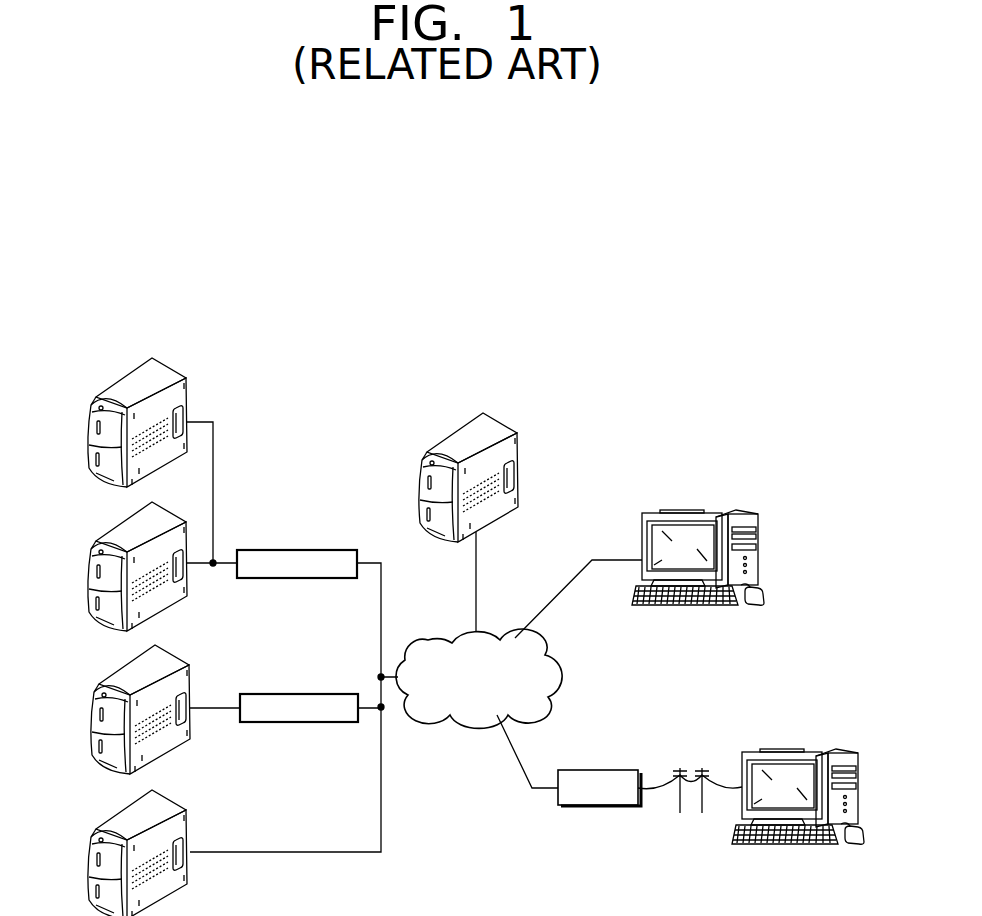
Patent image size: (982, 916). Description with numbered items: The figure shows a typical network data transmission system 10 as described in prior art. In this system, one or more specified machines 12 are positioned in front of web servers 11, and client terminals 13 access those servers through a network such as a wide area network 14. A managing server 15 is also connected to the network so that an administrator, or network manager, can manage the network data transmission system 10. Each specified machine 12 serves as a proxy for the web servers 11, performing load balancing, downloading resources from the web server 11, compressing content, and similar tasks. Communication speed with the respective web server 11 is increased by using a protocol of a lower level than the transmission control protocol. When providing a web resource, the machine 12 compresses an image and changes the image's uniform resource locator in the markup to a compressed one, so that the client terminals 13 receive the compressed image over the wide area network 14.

The network data transmission system 10 is at (642, 290).
The web server 11 is at (96, 392).
The specified machine 12 is at (297, 550).
The client terminal 13 is at (747, 505).
The wide area network 14 is at (490, 632).
The managing server 15 is at (498, 421).